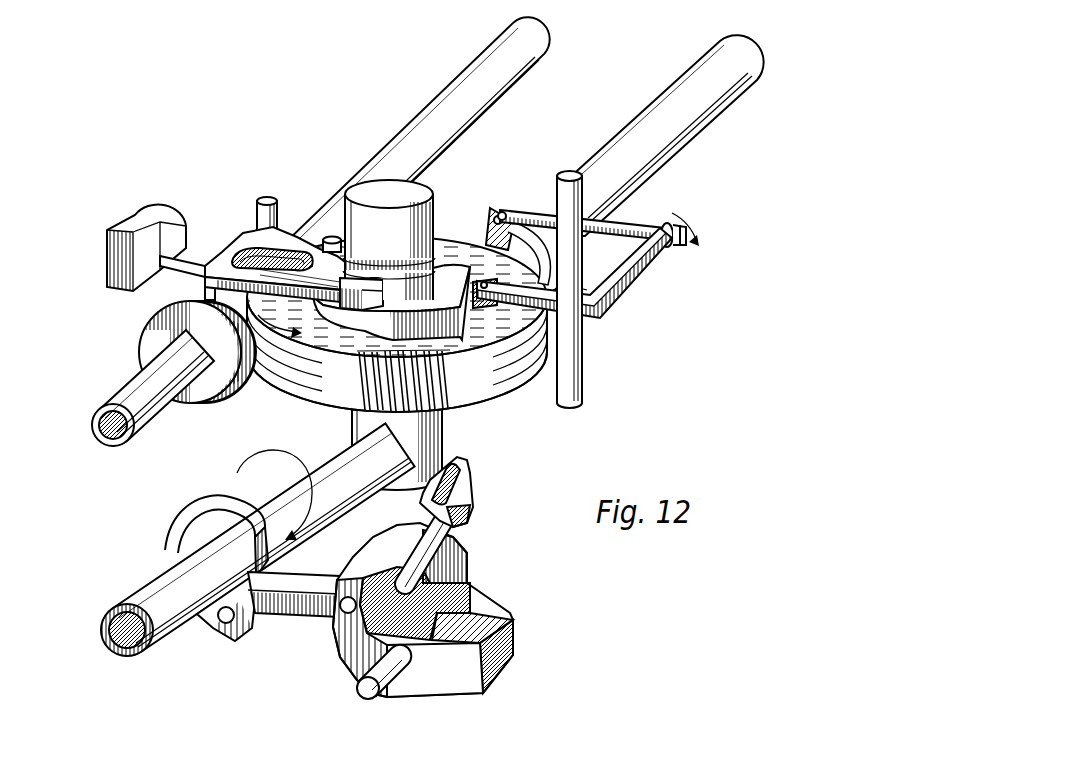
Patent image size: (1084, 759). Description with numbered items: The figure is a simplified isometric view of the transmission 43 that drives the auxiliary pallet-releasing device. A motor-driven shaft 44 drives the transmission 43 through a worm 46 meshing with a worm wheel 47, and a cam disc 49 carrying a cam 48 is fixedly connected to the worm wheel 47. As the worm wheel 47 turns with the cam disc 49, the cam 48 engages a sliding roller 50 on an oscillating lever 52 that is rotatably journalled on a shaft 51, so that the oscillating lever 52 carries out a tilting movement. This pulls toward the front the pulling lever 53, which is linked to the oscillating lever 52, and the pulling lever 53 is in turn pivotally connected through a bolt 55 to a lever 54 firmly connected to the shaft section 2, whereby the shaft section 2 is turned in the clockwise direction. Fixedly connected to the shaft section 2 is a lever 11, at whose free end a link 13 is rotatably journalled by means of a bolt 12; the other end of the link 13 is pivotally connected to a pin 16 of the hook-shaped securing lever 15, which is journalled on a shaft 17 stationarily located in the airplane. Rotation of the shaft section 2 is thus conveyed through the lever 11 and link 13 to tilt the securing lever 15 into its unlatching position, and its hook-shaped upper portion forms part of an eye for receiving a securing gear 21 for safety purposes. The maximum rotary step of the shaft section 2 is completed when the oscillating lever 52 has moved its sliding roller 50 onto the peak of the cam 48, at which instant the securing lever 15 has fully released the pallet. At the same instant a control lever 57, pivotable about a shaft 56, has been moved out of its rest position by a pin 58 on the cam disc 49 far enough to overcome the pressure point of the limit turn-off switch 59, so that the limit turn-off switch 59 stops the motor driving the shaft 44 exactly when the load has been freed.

The shaft section 2 is at (160, 582).
The lever 11 is at (215, 625).
The bolt 12 is at (229, 626).
The link 13 is at (303, 618).
The securing lever 15 is at (418, 698).
The pin 16 is at (345, 598).
The shaft 17 is at (368, 700).
The securing gear 21 is at (471, 497).
The transmission 43 is at (318, 136).
The shaft 44 is at (458, 98).
The worm 46 is at (162, 350).
The worm wheel 47 is at (282, 380).
The cam 48 is at (469, 316).
The cam disc 49 is at (388, 310).
The sliding roller 50 is at (485, 308).
The shaft 51 is at (572, 406).
The oscillating lever 52 is at (581, 308).
The pulling lever 53 is at (622, 237).
The lever 54 is at (490, 238).
The bolt 55 is at (500, 212).
The shaft 56 is at (275, 206).
The control lever 57 is at (218, 270).
The pin 58 is at (334, 236).
The limit turn-off switch 59 is at (131, 236).